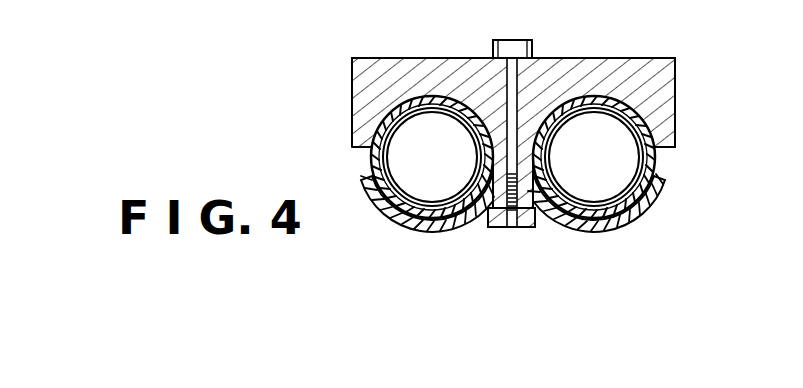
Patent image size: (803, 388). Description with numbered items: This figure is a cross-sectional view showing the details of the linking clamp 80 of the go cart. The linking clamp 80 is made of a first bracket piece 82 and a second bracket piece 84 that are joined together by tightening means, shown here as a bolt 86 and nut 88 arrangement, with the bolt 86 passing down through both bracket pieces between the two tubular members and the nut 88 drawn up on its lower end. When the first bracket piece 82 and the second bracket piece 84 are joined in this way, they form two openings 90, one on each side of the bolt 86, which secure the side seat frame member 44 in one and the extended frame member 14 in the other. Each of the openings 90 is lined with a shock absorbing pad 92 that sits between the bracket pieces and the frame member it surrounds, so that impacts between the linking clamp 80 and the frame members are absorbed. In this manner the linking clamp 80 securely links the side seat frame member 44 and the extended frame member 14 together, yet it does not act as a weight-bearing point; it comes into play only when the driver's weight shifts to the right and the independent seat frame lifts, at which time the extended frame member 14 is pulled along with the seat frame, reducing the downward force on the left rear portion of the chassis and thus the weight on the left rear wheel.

The extended frame member 14 is at (676, 163).
The side seat frame member 44 is at (409, 222).
The linking clamp 80 is at (340, 98).
The first bracket piece 82 is at (452, 58).
The second bracket piece 84 is at (360, 213).
The bolt 86 is at (540, 62).
The nut 88 is at (535, 227).
The openings 90 is at (366, 161).
The shock absorbing pads 92 is at (398, 103).